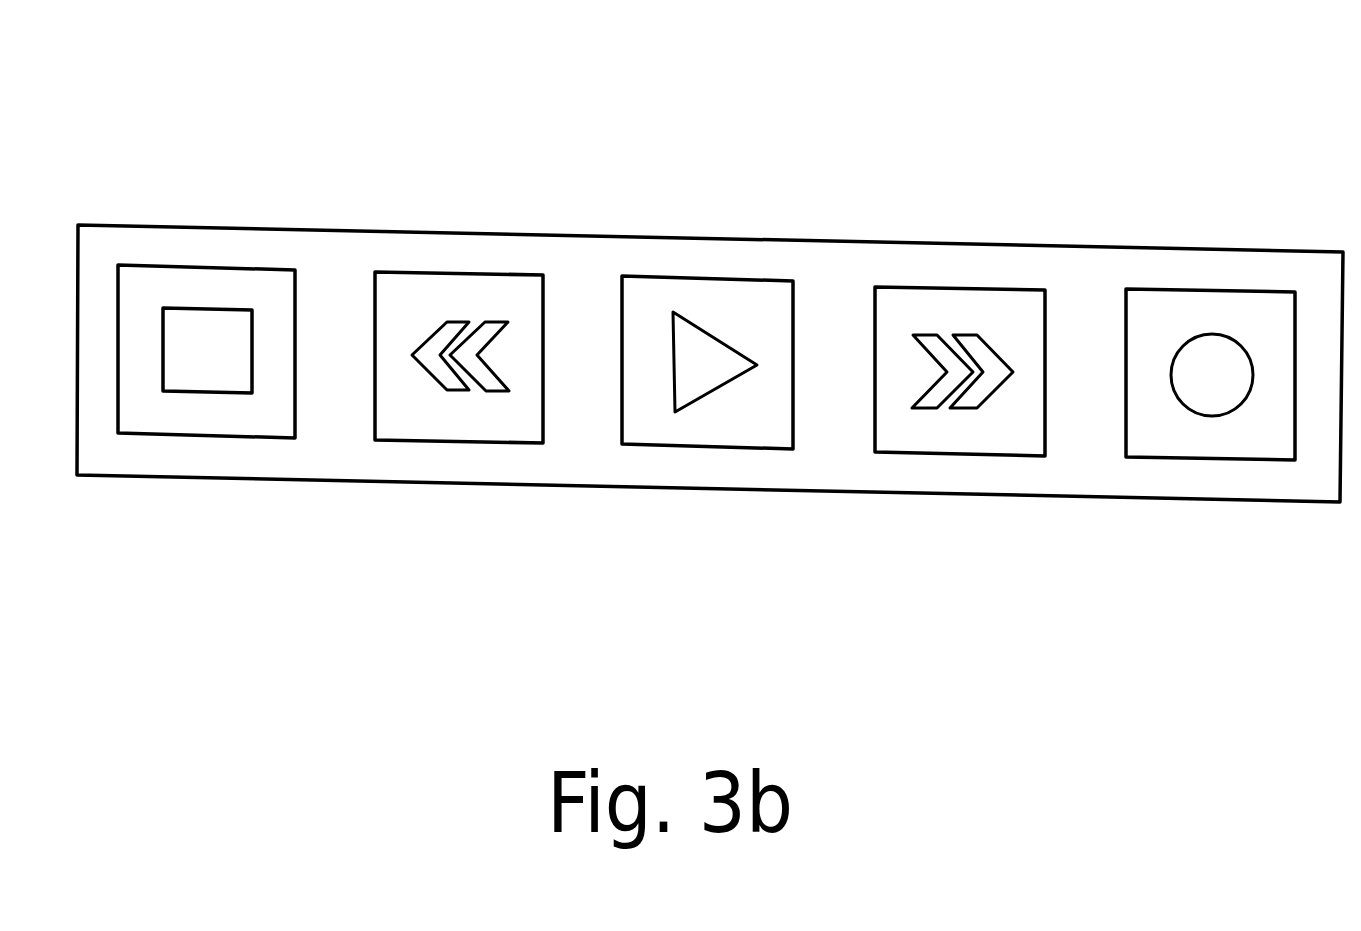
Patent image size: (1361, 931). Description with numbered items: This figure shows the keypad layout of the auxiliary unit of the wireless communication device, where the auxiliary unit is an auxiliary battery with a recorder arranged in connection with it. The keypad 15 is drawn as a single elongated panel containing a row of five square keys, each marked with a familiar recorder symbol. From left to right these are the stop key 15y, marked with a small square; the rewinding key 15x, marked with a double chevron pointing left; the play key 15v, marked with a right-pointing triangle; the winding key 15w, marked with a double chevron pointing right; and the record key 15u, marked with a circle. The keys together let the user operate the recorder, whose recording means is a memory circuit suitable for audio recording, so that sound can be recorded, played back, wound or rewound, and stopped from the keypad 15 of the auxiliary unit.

The keypad 15 is at (470, 190).
The stop key 15y is at (210, 437).
The rewinding key 15x is at (458, 445).
The play key 15v is at (708, 450).
The winding key 15w is at (962, 457).
The record key 15u is at (1215, 462).